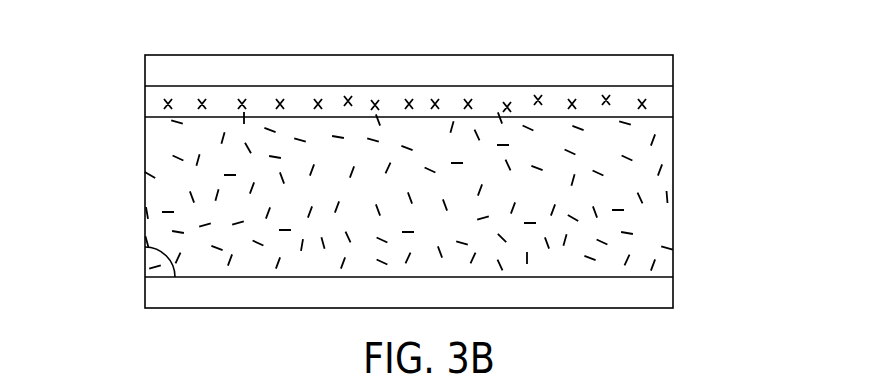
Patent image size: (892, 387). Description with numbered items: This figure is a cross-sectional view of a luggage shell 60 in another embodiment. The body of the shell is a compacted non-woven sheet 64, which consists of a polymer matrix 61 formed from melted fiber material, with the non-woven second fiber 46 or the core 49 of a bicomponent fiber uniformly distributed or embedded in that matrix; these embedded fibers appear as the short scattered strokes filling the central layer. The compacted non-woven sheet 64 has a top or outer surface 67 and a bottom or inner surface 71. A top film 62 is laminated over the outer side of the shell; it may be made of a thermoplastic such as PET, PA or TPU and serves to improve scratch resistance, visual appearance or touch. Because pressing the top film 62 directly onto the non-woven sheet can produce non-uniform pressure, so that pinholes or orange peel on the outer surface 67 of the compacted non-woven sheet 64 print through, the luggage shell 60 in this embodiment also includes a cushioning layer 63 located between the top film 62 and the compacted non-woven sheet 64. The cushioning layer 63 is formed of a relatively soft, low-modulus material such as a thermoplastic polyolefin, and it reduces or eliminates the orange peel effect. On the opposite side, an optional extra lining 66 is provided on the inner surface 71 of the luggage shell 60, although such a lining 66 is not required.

The luggage shell 60 is at (396, 160).
The top film 62 is at (658, 69).
The cushioning layer 63 is at (673, 100).
The outer surface 67 is at (145, 118).
The polymer matrix 61 is at (453, 191).
The compacted non-woven sheet 64 is at (453, 191).
The non-woven second fiber 46 is at (453, 191).
The core 49 is at (653, 228).
The inner surface 71 is at (145, 248).
The lining 66 is at (673, 285).